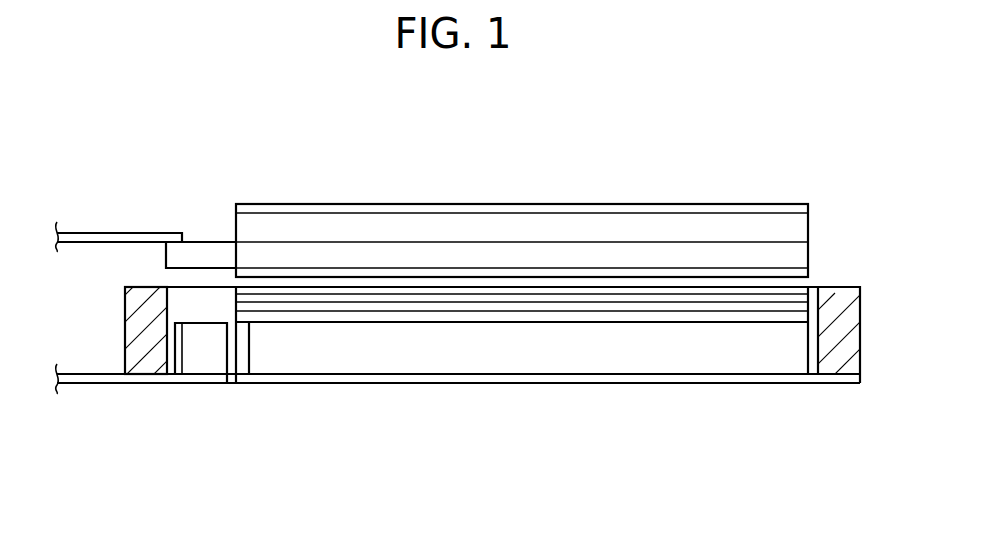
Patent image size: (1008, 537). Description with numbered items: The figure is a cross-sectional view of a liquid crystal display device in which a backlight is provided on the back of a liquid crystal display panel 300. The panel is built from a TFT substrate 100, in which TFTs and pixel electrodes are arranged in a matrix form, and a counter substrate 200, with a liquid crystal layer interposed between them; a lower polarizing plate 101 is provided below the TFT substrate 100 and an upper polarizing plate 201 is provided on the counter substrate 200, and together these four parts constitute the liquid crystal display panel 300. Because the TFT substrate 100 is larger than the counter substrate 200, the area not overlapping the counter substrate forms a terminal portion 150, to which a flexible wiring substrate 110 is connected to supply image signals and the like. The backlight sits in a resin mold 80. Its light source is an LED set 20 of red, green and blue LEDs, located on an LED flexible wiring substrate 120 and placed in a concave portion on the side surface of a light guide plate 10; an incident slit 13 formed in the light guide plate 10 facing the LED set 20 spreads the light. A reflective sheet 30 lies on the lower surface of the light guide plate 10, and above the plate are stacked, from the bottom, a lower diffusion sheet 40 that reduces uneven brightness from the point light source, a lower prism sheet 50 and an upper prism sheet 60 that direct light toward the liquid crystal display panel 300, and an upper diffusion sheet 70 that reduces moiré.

The light guide plate 10 is at (352, 352).
The incident slit 13 is at (242, 345).
The LED set 20 is at (207, 352).
The reflective sheet 30 is at (708, 378).
The lower diffusion sheet 40 is at (562, 317).
The lower prism sheet 50 is at (513, 310).
The upper prism sheet 60 is at (470, 300).
The upper diffusion sheet 70 is at (418, 290).
The resin mold 80 is at (148, 363).
The TFT substrate 100 is at (559, 258).
The lower polarizing plate 101 is at (406, 162).
The flexible wiring substrate 110 is at (102, 240).
The LED flexible wiring substrate 120 is at (90, 378).
The terminal portion 150 is at (203, 242).
The counter substrate 200 is at (496, 222).
The upper polarizing plate 201 is at (433, 213).
The liquid crystal display panel 300 is at (522, 192).